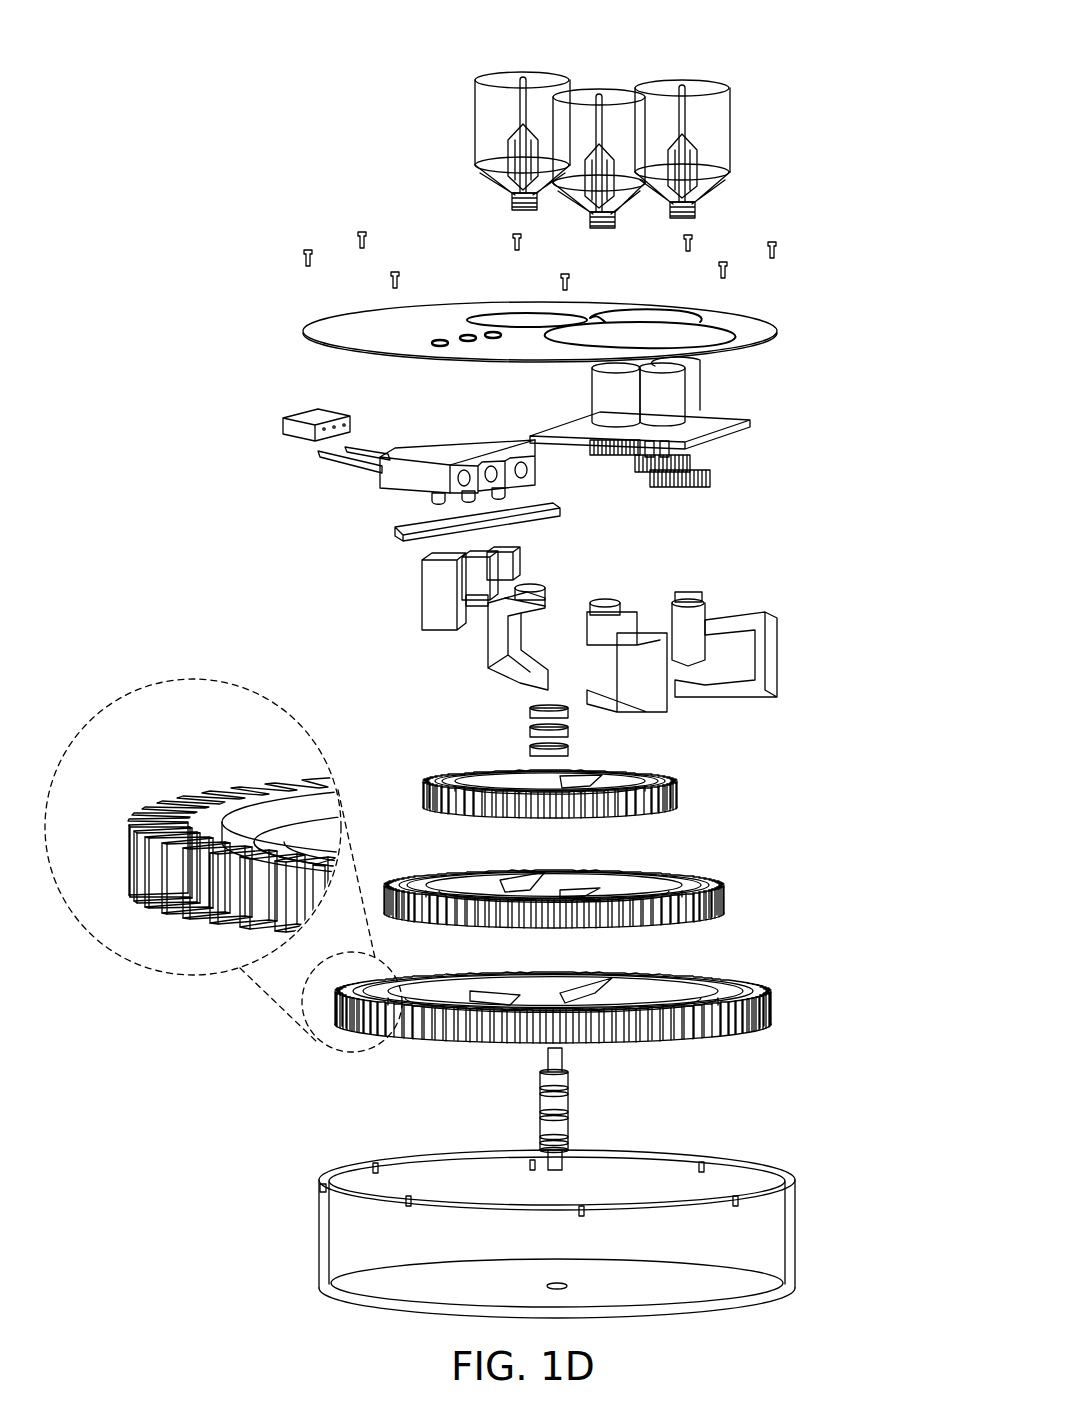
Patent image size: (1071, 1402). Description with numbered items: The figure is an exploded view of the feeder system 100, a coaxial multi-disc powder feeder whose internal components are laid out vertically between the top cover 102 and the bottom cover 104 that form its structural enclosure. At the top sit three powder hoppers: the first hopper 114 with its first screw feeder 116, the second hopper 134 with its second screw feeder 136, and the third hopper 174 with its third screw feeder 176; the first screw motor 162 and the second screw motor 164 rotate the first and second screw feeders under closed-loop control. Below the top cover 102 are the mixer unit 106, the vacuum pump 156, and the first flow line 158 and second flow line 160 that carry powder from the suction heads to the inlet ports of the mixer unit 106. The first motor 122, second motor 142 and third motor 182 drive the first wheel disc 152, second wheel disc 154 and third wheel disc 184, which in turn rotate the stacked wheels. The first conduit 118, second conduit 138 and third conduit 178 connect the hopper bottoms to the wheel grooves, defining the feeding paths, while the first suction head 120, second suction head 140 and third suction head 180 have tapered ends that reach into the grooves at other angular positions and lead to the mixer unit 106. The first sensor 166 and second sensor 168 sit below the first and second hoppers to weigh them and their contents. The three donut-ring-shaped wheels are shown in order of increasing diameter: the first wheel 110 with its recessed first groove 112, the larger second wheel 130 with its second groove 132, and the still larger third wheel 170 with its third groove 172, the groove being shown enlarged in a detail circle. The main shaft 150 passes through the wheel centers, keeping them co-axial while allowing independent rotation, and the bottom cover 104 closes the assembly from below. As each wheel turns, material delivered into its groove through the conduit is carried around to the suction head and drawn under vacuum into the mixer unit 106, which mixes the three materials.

The feeder system 100 is at (860, 56).
The top cover 102 is at (305, 330).
The bottom cover 104 is at (795, 1228).
The mixer unit 106 is at (283, 424).
The first wheel 110 is at (684, 781).
The first groove 112 is at (656, 778).
The first hopper 114 is at (475, 100).
The first screw feeder 116 is at (512, 198).
The first conduit 118 is at (548, 595).
The first suction head 120 is at (505, 572).
The first motor 122 is at (592, 385).
The second wheel 130 is at (727, 889).
The second groove 132 is at (702, 880).
The second hopper 134 is at (603, 90).
The second screw feeder 136 is at (615, 215).
The second conduit 138 is at (620, 605).
The second suction head 140 is at (475, 595).
The second motor 142 is at (670, 390).
The main shaft 150 is at (568, 1100).
The first wheel disc 152 is at (605, 456).
The second wheel disc 154 is at (640, 472).
The vacuum pump 156 is at (460, 450).
The first flow line 158 is at (395, 460).
The second flow line 160 is at (372, 465).
The first screw motor 162 is at (524, 212).
The second screw motor 164 is at (598, 230).
The first sensor 166 is at (535, 610).
The second sensor 168 is at (620, 680).
The third wheel 170 is at (774, 993).
The third groove 172 is at (222, 830).
The third hopper 174 is at (730, 120).
The third screw feeder 176 is at (697, 208).
The third conduit 178 is at (700, 595).
The third suction head 180 is at (422, 578).
The third motor 182 is at (700, 385).
The third wheel disc 184 is at (700, 480).